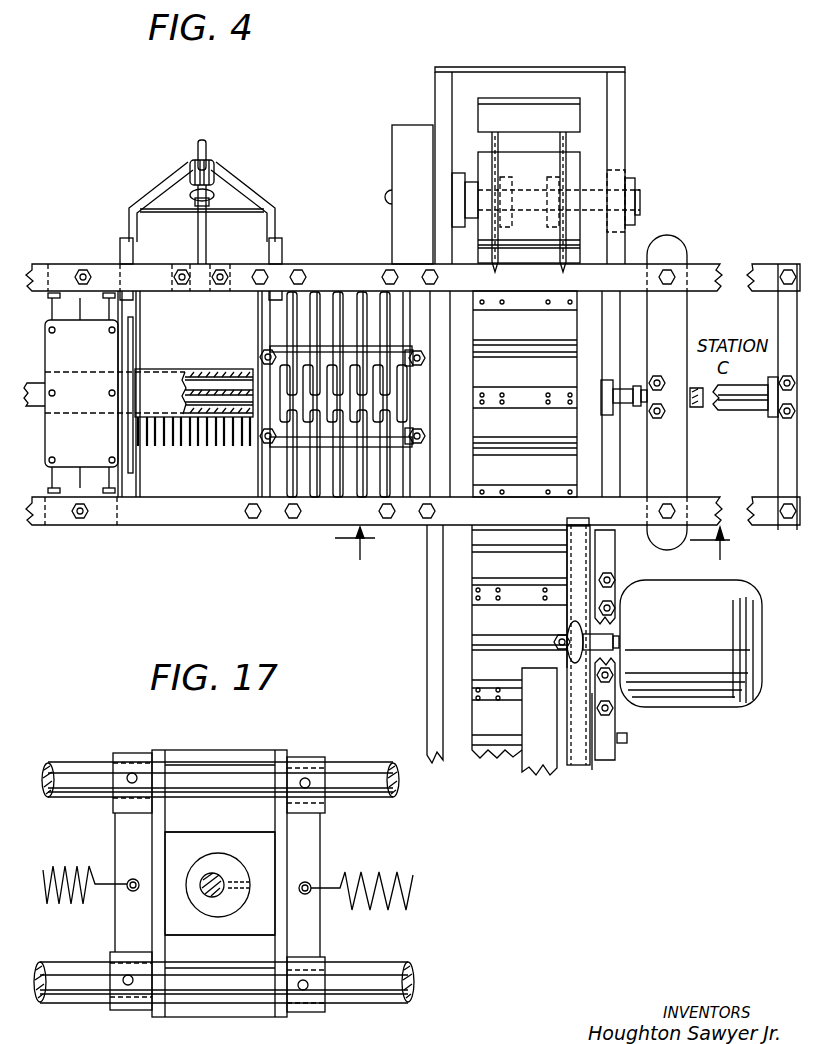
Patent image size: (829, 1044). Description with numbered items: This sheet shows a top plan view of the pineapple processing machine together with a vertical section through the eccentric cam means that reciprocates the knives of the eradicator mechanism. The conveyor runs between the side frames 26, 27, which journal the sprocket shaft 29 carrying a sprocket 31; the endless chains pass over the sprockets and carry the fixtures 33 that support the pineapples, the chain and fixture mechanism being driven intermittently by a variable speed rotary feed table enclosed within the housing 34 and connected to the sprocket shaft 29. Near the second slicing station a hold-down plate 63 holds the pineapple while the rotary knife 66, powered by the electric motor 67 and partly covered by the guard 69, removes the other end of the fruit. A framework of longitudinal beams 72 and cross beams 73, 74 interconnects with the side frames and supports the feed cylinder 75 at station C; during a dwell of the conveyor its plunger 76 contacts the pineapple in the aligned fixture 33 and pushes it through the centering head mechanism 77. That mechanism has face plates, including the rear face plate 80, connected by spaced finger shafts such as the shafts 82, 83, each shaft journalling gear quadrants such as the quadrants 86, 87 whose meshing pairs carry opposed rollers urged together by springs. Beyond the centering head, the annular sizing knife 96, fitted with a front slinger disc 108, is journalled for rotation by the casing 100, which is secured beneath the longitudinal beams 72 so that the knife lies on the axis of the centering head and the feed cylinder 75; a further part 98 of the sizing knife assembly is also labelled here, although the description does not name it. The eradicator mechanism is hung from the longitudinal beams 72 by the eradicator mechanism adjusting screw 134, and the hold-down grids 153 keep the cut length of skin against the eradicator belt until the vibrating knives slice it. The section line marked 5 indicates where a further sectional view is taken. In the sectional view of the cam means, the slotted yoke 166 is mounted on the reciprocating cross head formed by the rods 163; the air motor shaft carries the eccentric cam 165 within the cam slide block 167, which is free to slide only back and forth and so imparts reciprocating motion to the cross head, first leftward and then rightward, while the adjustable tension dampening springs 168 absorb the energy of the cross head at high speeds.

In FIG. 4, the section line 5 is at (533, 543).
In FIG. 4, the side frame 26 is at (433, 197).
In FIG. 4, the side frame 27 is at (620, 153).
In FIG. 4, the sprocket shaft 29 is at (522, 198).
In FIG. 4, the sprocket 31 is at (562, 142).
In FIG. 4, the fixture 33 is at (500, 106).
In FIG. 4, the housing 34 is at (418, 140).
In FIG. 4, the hold-down plate 63 is at (535, 748).
In FIG. 4, the rotary knife 66 is at (578, 757).
In FIG. 4, the electric motor 67 is at (713, 690).
In FIG. 4, the guard 69 is at (590, 559).
In FIG. 4, the longitudinal beams 72 is at (79, 243).
In FIG. 4, the cross beam 73 is at (671, 470).
In FIG. 4, the cross beam 74 is at (786, 318).
In FIG. 4, the feed cylinder 75 is at (731, 400).
In FIG. 4, the plunger 76 is at (609, 393).
In FIG. 4, the centering head mechanism 77 is at (327, 298).
In FIG. 4, the rear face plate 80 is at (413, 327).
In FIG. 4, the finger shaft 82 is at (421, 358).
In FIG. 4, the finger shaft 83 is at (421, 437).
In FIG. 4, the gear quadrant 86 is at (290, 473).
In FIG. 4, the gear quadrant 87 is at (373, 292).
In FIG. 4, the annular sizing knife 96 is at (222, 344).
In FIG. 4, the shaft 98 is at (217, 390).
In FIG. 4, the casing 100 is at (93, 460).
In FIG. 4, the front slinger disc 108 is at (132, 470).
In FIG. 4, the eradicator mechanism adjusting screw 134 is at (206, 255).
In FIG. 4, the hold-down grids 153 is at (218, 447).
In FIG. 17, the rods of reciprocating cross head 163 is at (65, 789).
In FIG. 17, the eccentric cam 165 is at (202, 868).
In FIG. 17, the slotted yoke 166 is at (225, 744).
In FIG. 17, the cam slide block 167 is at (262, 862).
In FIG. 17, the adjustable tension dampening springs 168 is at (52, 890).